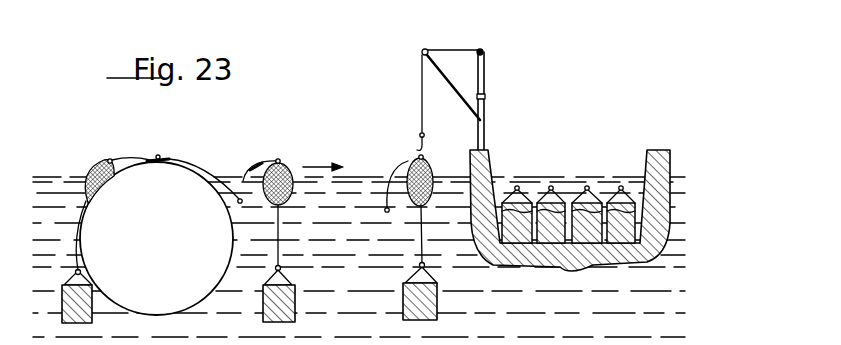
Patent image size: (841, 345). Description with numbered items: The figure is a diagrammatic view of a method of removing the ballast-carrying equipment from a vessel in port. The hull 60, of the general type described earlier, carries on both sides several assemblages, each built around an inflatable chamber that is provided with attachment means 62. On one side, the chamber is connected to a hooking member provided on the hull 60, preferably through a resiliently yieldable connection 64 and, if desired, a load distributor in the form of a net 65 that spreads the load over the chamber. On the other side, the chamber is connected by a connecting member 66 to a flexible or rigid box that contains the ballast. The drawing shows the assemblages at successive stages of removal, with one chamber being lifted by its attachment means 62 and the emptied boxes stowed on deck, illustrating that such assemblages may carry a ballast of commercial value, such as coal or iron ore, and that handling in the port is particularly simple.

The hull 60 is at (205, 298).
The attachment means 62 is at (425, 145).
The resiliently yieldable connection 64 is at (134, 162).
The net 65 is at (258, 158).
The connecting member 66 is at (281, 255).